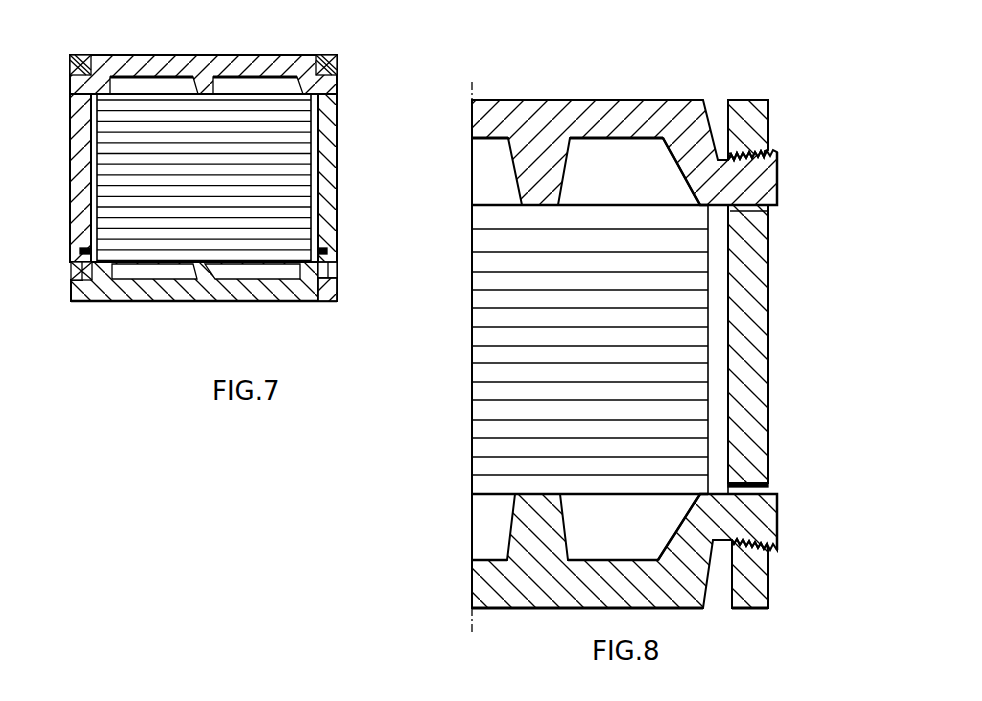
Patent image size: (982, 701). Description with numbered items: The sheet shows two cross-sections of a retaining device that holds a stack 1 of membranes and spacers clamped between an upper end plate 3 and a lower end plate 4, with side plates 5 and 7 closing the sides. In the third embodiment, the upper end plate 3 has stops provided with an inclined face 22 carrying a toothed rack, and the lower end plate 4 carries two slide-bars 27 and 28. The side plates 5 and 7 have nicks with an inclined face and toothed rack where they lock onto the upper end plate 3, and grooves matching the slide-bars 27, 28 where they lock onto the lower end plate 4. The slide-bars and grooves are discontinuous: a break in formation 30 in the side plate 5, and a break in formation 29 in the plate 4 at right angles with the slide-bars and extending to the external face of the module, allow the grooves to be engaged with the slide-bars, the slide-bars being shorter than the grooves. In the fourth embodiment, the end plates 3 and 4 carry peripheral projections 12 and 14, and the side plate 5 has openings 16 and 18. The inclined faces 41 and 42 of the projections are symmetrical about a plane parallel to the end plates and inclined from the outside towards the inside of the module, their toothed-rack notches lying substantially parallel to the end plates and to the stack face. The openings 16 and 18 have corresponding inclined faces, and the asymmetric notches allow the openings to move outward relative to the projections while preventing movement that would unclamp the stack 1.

In FIG. 7, the stack 1 is at (278, 128).
In FIG. 8, the stack 1 is at (542, 370).
In FIG. 7, the upper end plate 3 is at (239, 67).
In FIG. 8, the upper end plate 3 is at (542, 143).
In FIG. 7, the lower end plate 4 is at (247, 290).
In FIG. 8, the lower end plate 4 is at (537, 575).
In FIG. 7, the side plate 5 is at (332, 168).
In FIG. 8, the side plate 5 is at (752, 343).
In FIG. 7, the side plate 7 is at (83, 175).
In FIG. 8, the projection 12 is at (740, 175).
In FIG. 8, the projection 14 is at (745, 525).
In FIG. 8, the opening 16 is at (753, 210).
In FIG. 8, the opening 18 is at (758, 488).
In FIG. 7, the inclined face 22 is at (88, 68).
In FIG. 7, the slide-bar 27 is at (82, 278).
In FIG. 7, the slide-bar 28 is at (337, 287).
In FIG. 7, the break in formation 29 is at (325, 297).
In FIG. 7, the break in formation 30 is at (327, 253).
In FIG. 8, the inclined face 41 is at (758, 140).
In FIG. 8, the inclined face 42 is at (758, 552).